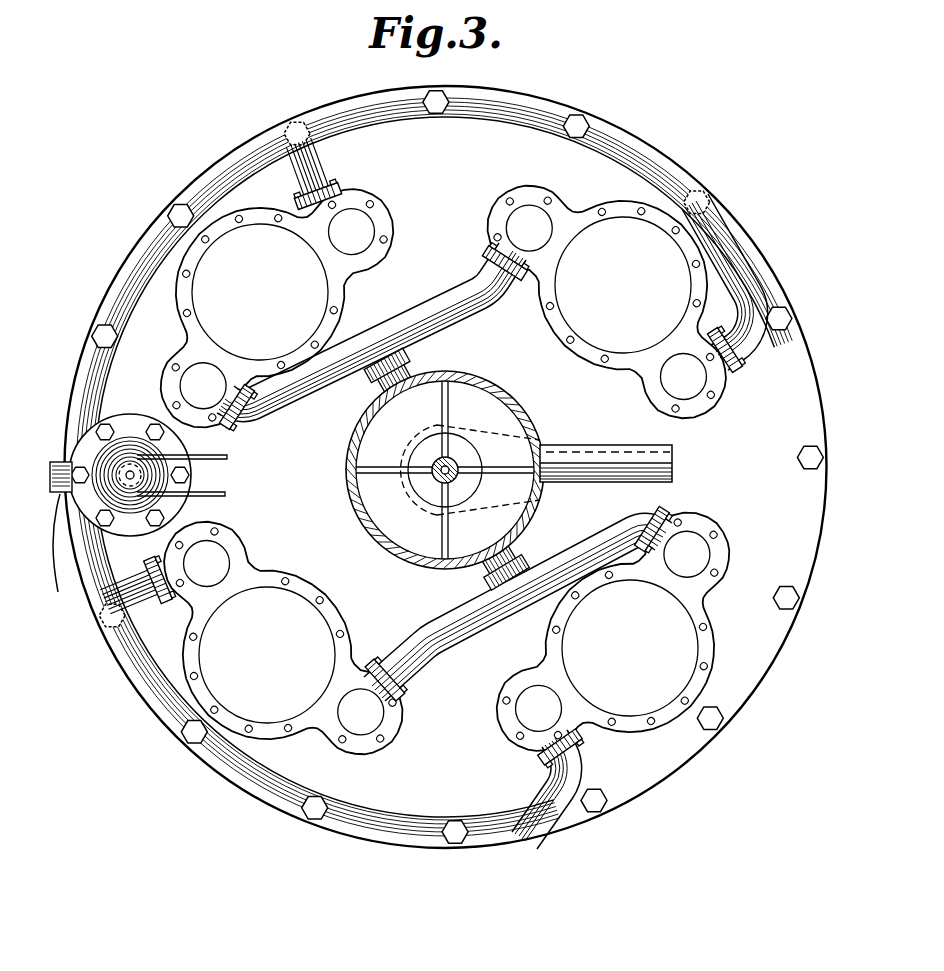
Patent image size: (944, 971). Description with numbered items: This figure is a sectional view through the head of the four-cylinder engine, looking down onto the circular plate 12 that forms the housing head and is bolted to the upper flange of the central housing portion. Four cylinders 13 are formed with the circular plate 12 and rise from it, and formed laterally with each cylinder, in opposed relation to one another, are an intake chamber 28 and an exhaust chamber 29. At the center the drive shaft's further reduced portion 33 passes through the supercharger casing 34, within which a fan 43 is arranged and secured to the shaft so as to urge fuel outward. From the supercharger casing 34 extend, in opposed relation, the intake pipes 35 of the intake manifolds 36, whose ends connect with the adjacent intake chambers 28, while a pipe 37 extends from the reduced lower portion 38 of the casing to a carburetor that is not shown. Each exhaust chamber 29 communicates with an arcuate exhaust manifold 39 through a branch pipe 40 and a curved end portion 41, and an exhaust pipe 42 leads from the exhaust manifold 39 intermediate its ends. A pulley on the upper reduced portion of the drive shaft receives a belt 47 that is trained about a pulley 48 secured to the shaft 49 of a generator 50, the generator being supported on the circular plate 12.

The circular plate 12 is at (692, 742).
The cylinders 13 is at (327, 335).
The intake chambers 28 is at (487, 238).
The exhaust chambers 29 is at (388, 230).
The reduced portion of the drive shaft 33 is at (437, 482).
The supercharger casing 34 is at (507, 397).
The intake pipes 35 is at (410, 370).
The intake manifolds 36 is at (487, 288).
The pipe 37 is at (590, 460).
The reduced lower portion 38 is at (437, 497).
The exhaust manifold 39 is at (743, 250).
The branch pipes 40 is at (312, 165).
The curved end portions 41 is at (758, 338).
The exhaust pipe 42 is at (64, 537).
The fan 43 is at (517, 466).
The belt 47 is at (212, 495).
The pulley 48 is at (132, 488).
The shaft 49 is at (134, 473).
The generator 50 is at (125, 442).